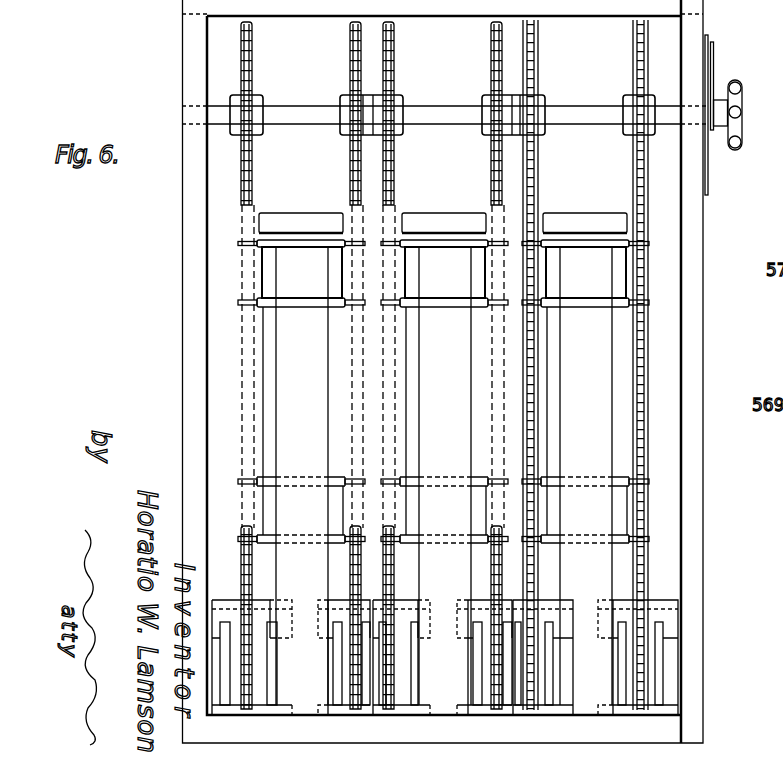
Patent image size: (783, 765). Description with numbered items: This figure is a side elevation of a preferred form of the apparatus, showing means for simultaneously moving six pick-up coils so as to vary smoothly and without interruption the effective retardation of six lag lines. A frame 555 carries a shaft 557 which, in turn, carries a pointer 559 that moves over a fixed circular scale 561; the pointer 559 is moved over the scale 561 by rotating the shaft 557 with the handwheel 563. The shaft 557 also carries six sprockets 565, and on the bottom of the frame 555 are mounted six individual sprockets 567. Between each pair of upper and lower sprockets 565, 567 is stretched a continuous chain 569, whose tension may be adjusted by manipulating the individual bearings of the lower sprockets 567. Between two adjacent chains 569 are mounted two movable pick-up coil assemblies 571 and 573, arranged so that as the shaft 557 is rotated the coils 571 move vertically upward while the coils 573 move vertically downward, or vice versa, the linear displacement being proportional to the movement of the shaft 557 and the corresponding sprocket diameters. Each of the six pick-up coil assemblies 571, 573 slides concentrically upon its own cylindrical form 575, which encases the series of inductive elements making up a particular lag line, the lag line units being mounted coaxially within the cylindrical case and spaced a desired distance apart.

The frame 555 is at (182, 257).
The shaft 557 is at (436, 104).
The pointer 559 is at (714, 63).
The fixed circular scale 561 is at (706, 35).
The handwheel 563 is at (738, 150).
The sprockets 565 is at (491, 43).
The individual sprockets 567 is at (494, 568).
The continuous chain 569 is at (347, 208).
The movable pick-up coil assembly 571 is at (443, 260).
The movable pick-up coil assembly 573 is at (268, 482).
The cylindrical form 575 is at (462, 353).